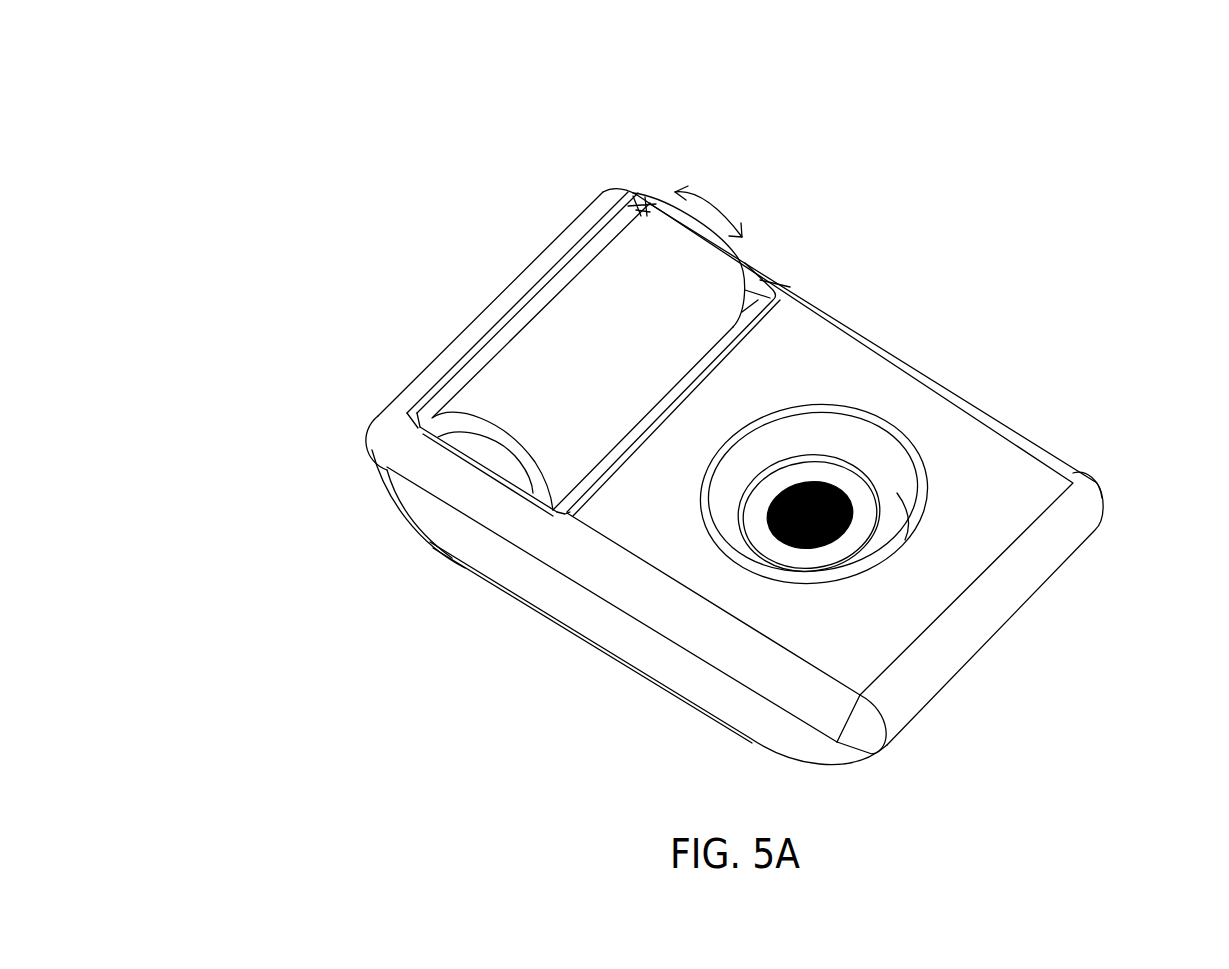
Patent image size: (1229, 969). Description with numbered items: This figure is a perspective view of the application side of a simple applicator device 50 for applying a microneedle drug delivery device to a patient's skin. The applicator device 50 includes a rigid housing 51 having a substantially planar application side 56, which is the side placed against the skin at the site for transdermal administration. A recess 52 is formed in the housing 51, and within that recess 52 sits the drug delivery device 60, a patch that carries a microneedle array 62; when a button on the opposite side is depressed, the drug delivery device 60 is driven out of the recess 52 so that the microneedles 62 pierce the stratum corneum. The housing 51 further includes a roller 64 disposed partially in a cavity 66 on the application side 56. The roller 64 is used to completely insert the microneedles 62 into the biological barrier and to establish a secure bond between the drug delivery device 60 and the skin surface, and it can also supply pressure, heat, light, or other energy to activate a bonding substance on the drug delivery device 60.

The applicator device 50 is at (322, 189).
The rigid housing 51 is at (603, 615).
The recess 52 is at (838, 432).
The application side 56 is at (795, 345).
The drug delivery device 60 is at (863, 527).
The microneedle array 62 is at (842, 500).
The roller 64 is at (530, 390).
The cavity 66 is at (593, 257).